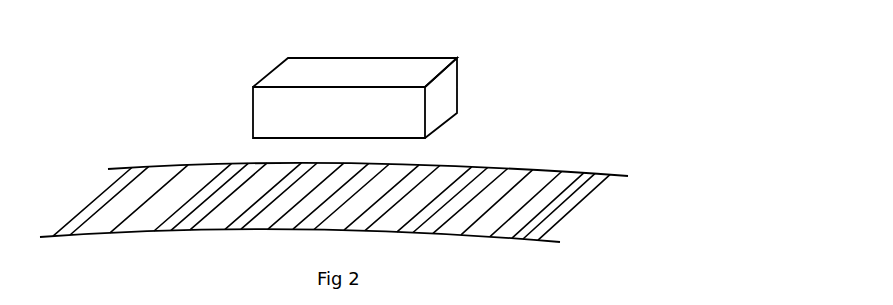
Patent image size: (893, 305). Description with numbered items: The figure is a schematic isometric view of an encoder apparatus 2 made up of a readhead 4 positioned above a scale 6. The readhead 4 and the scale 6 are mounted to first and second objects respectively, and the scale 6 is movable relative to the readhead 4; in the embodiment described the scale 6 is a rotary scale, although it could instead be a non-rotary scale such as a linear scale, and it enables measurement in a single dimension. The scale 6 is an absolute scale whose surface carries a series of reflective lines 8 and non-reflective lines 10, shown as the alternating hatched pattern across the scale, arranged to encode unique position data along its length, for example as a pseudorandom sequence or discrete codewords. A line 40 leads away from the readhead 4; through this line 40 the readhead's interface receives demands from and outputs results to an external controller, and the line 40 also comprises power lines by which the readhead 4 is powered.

The encoder apparatus 2 is at (498, 61).
The readhead 4 is at (261, 78).
The line 40 is at (437, 98).
The scale 6 is at (547, 152).
The reflective lines 8 is at (139, 174).
The non-reflective lines 10 is at (106, 228).